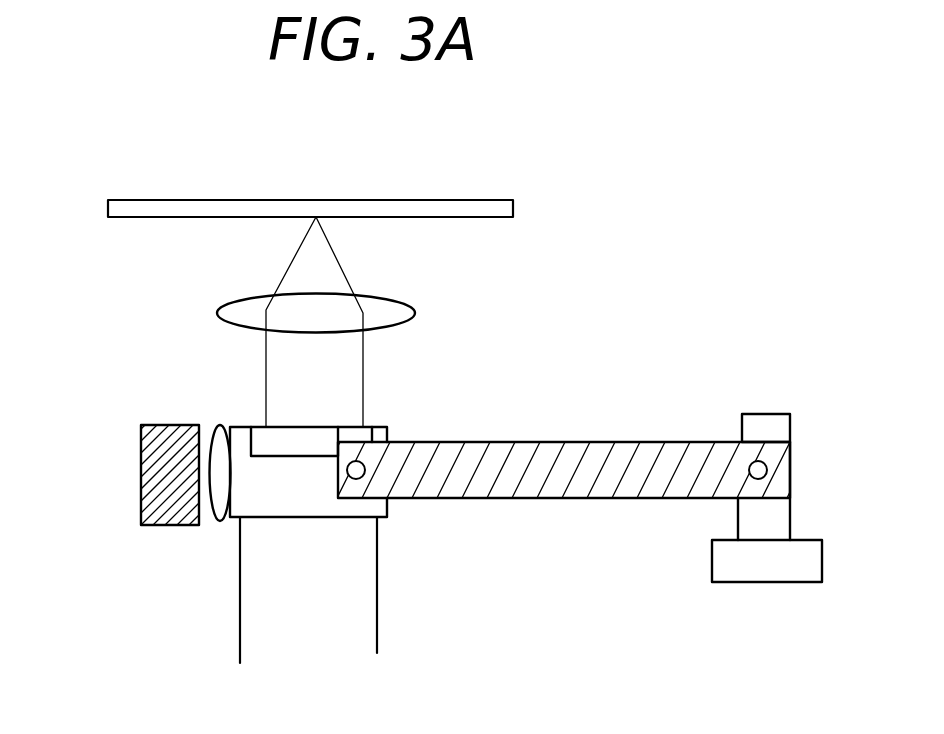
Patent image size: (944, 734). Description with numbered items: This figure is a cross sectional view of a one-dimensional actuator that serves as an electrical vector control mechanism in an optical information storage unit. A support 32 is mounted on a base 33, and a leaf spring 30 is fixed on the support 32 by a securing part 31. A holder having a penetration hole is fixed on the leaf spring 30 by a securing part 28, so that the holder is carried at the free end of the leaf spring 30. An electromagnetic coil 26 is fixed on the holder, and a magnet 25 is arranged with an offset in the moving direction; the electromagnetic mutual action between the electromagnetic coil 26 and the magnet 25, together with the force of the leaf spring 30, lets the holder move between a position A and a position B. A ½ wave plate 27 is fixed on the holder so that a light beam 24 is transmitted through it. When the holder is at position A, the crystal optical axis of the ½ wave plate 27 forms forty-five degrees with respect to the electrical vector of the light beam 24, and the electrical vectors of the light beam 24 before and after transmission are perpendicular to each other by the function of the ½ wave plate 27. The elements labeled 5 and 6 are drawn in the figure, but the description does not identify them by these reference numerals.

The lens 5 is at (223, 317).
The optical disk 6 is at (227, 198).
The light beam 24 is at (377, 614).
The magnet 25 is at (140, 513).
The electromagnetic coil 26 is at (220, 525).
The ½ wave plate 27 is at (335, 435).
The securing part 28 is at (366, 471).
The leaf spring 30 is at (596, 442).
The securing part 31 is at (750, 476).
The support 32 is at (762, 414).
The base 33 is at (748, 582).